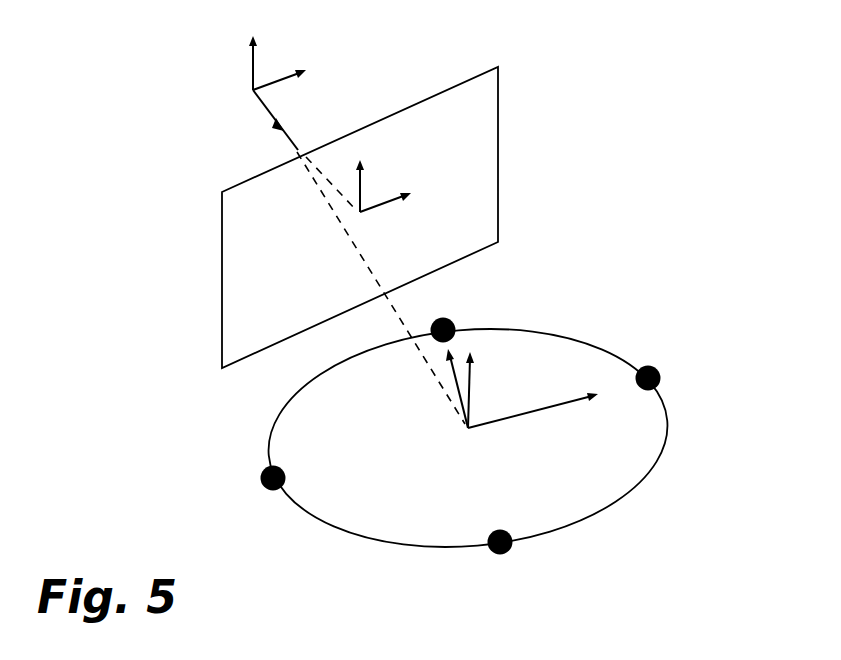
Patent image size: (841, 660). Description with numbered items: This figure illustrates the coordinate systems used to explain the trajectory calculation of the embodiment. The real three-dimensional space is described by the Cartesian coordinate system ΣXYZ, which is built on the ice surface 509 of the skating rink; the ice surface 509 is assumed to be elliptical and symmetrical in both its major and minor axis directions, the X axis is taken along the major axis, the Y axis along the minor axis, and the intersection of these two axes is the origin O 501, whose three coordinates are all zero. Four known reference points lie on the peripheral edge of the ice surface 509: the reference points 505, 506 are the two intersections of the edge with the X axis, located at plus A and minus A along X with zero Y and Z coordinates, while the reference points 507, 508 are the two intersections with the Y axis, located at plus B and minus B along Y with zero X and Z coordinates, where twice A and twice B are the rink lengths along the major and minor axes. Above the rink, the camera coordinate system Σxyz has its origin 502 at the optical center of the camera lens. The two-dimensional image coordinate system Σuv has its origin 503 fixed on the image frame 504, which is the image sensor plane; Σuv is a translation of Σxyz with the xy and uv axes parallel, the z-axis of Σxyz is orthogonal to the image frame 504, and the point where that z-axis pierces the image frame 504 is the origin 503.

The origin O (0,0,0) 501 is at (468, 433).
The origin of coordinate system Σxyz 502 is at (253, 91).
The origin of coordinate system Σuv 503 is at (362, 214).
The image frame 504 is at (498, 170).
The reference point 505 is at (655, 366).
The reference point 506 is at (267, 495).
The reference point 507 is at (450, 319).
The reference point 508 is at (505, 556).
The ice surface 509 is at (638, 478).